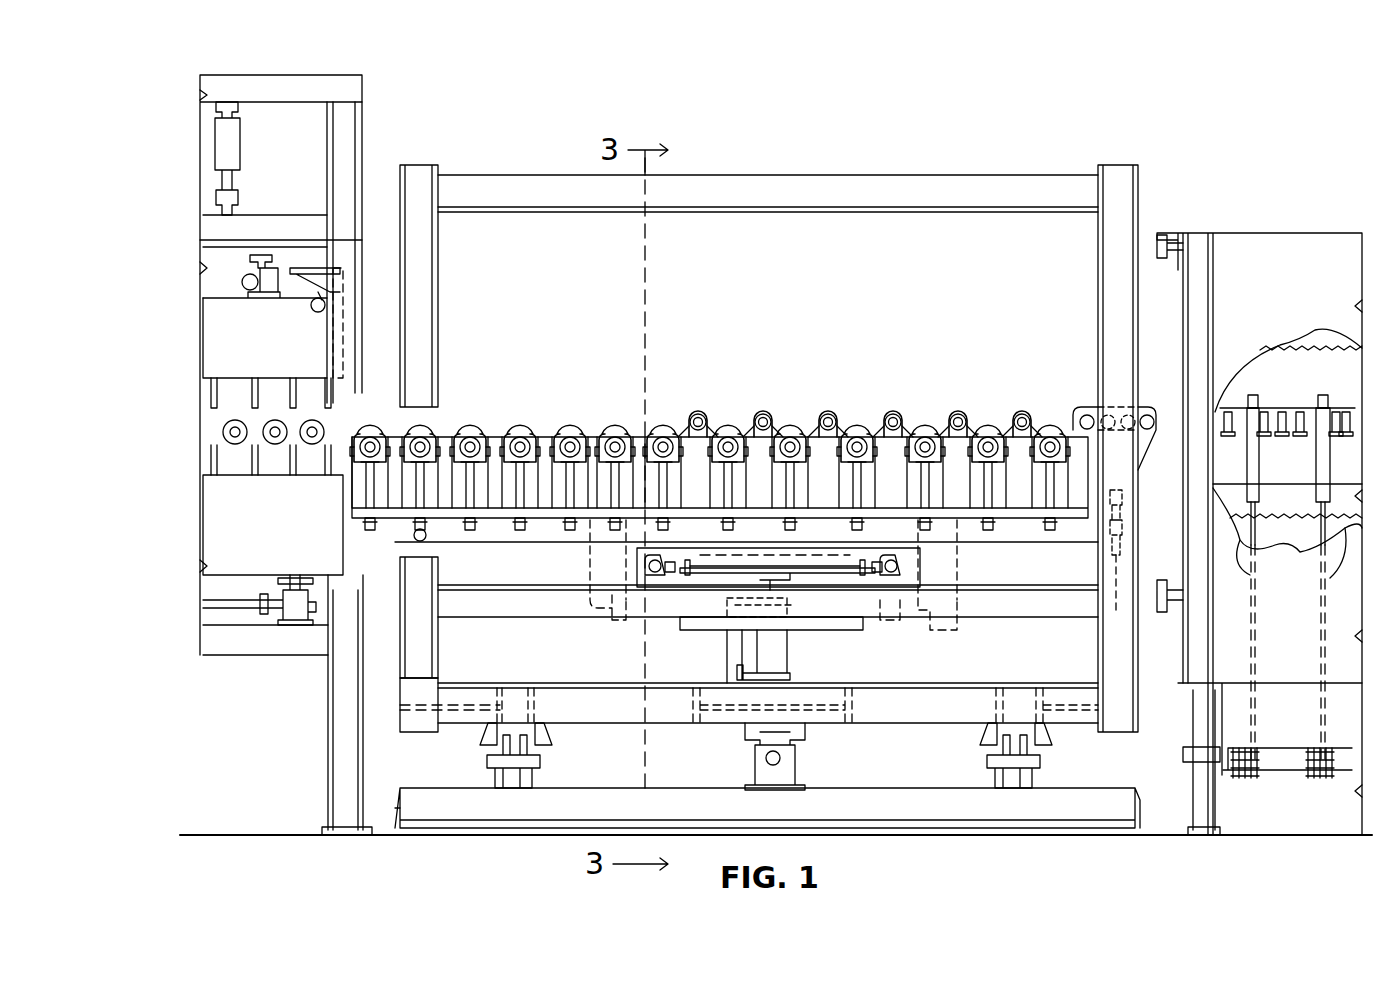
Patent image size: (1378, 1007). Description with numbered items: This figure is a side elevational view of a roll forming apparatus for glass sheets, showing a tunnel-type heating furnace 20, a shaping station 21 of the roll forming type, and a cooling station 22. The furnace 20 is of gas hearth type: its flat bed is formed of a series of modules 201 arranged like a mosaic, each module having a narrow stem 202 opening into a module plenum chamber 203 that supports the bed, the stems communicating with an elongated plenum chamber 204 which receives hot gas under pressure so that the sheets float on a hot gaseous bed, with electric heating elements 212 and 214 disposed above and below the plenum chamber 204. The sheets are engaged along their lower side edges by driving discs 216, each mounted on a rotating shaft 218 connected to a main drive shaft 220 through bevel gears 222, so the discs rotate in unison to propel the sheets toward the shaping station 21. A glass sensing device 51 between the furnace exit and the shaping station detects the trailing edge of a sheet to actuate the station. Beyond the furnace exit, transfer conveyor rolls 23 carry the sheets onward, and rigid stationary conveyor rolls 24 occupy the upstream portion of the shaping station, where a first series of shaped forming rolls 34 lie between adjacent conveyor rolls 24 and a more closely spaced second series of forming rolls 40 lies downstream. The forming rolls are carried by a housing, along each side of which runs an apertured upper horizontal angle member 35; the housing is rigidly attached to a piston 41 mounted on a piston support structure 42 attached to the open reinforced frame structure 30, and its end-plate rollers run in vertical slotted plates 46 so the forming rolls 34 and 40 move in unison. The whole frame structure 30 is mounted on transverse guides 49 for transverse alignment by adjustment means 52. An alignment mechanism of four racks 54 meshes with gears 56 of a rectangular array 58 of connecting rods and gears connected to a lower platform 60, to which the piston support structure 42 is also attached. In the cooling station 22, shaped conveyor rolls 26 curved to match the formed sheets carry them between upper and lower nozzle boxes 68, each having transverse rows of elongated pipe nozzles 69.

The tunnel-type heating furnace 20 is at (1293, 224).
The shaping station 21 is at (752, 170).
The cooling station 22 is at (272, 75).
The transfer conveyor rolls 23 is at (1170, 408).
The stationary conveyor rolls 24 is at (760, 416).
The shaped conveyor rolls 26 is at (330, 412).
The open reinforced frame structure 30 is at (400, 720).
The first series of shaped forming rolls 34 is at (865, 416).
The upper horizontal angle member 35 is at (1003, 541).
The second series of shaped forming rolls 40 is at (592, 424).
The piston 41 is at (787, 648).
The piston support structure 42 is at (855, 618).
The vertical slotted plates 46 is at (1121, 564).
The transverse guides 49 is at (535, 748).
The glass sensing device 51 is at (1157, 240).
The adjustment means 52 is at (780, 758).
The racks 54 is at (616, 635).
The gears 56 is at (650, 558).
The rectangular array of lower horizontal connecting rods and gears 58 is at (722, 555).
The lower platform 60 is at (1062, 618).
The nozzle boxes 68 is at (270, 354).
The pipe nozzles 69 is at (215, 438).
The modules 201 is at (1296, 392).
The stem 202 is at (1273, 455).
The module plenum chamber 203 is at (1225, 418).
The elongated plenum chamber 204 is at (1268, 478).
The electric heating element 212 is at (1312, 345).
The electric heating element 214 is at (1268, 508).
The driving discs 216 is at (1350, 408).
The rotating shaft 218 is at (1330, 580).
The main drive shaft 220 is at (1340, 775).
The bevel gears 222 is at (1320, 760).